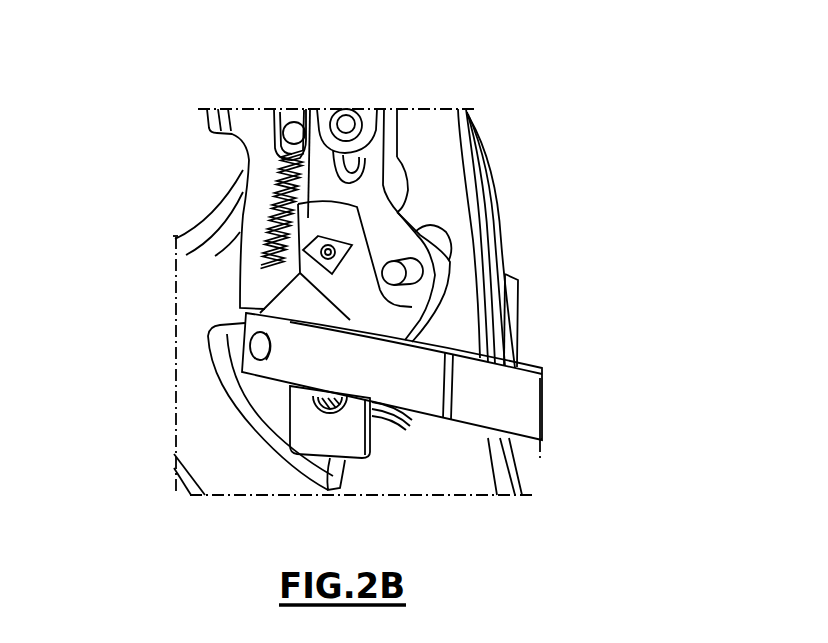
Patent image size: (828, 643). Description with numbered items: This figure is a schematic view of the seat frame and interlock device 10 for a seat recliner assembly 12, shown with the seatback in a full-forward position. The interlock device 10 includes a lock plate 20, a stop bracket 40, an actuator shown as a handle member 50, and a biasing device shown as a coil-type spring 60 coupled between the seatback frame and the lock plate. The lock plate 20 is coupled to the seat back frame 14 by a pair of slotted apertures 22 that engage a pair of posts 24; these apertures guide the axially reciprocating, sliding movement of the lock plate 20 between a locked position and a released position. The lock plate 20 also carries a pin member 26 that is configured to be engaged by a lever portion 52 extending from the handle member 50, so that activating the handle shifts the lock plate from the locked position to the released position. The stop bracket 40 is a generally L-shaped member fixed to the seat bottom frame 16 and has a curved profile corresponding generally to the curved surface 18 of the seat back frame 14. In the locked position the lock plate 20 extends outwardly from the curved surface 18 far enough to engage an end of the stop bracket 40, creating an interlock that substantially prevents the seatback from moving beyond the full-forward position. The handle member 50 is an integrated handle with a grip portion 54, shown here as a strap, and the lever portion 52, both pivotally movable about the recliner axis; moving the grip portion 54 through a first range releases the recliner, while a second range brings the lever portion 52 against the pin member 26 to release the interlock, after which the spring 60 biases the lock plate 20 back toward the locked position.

The interlock device 10 is at (440, 454).
The seat recliner assembly 12 is at (506, 158).
The seat back frame 14 is at (432, 120).
The seat bottom frame 16 is at (197, 400).
The curved surface 18 is at (221, 262).
The lock plate 20 is at (358, 450).
The slotted apertures 22 is at (362, 172).
The posts 24 is at (365, 116).
The pin member 26 is at (400, 262).
The stop bracket 40 is at (232, 338).
The handle member 50 is at (298, 302).
The lever portion 52 is at (395, 327).
The grip portion 54 is at (534, 368).
The spring 60 is at (272, 194).